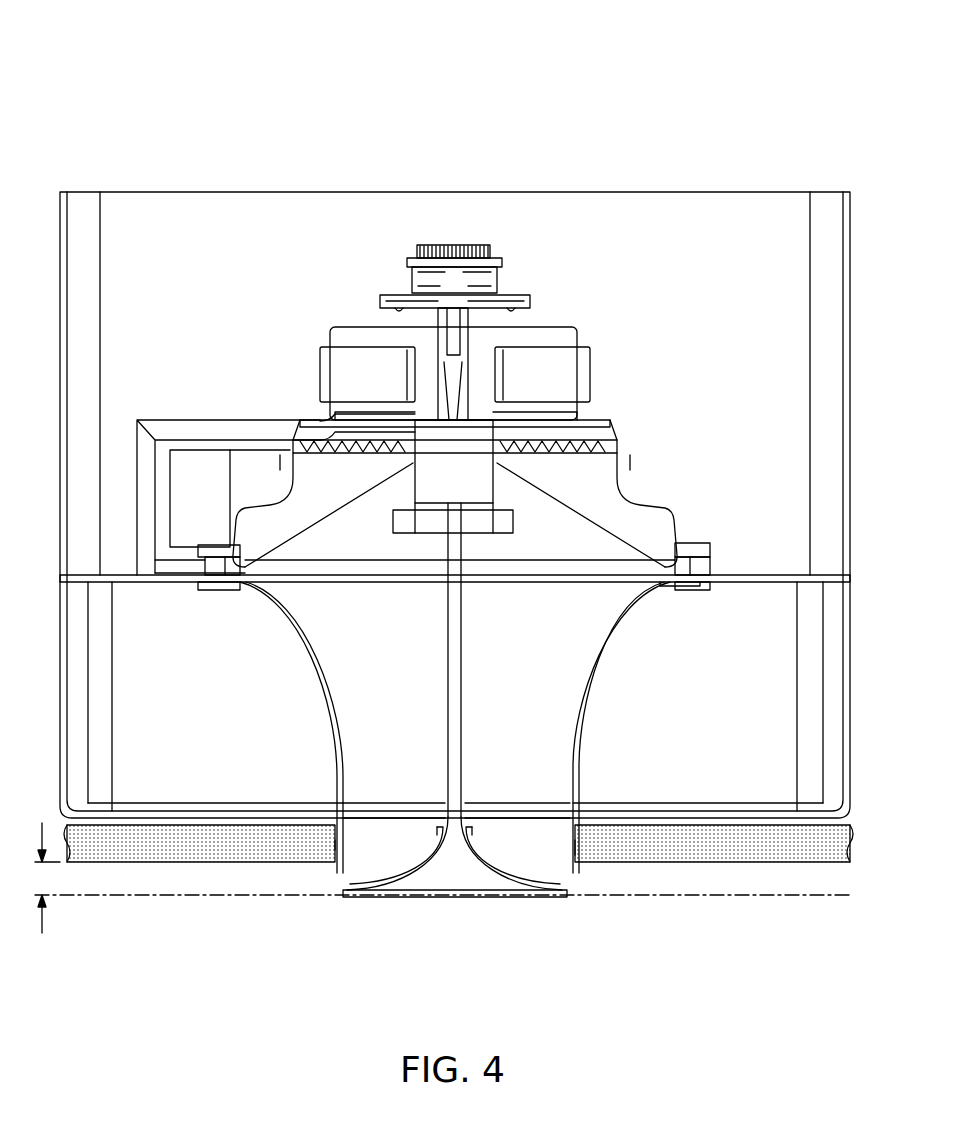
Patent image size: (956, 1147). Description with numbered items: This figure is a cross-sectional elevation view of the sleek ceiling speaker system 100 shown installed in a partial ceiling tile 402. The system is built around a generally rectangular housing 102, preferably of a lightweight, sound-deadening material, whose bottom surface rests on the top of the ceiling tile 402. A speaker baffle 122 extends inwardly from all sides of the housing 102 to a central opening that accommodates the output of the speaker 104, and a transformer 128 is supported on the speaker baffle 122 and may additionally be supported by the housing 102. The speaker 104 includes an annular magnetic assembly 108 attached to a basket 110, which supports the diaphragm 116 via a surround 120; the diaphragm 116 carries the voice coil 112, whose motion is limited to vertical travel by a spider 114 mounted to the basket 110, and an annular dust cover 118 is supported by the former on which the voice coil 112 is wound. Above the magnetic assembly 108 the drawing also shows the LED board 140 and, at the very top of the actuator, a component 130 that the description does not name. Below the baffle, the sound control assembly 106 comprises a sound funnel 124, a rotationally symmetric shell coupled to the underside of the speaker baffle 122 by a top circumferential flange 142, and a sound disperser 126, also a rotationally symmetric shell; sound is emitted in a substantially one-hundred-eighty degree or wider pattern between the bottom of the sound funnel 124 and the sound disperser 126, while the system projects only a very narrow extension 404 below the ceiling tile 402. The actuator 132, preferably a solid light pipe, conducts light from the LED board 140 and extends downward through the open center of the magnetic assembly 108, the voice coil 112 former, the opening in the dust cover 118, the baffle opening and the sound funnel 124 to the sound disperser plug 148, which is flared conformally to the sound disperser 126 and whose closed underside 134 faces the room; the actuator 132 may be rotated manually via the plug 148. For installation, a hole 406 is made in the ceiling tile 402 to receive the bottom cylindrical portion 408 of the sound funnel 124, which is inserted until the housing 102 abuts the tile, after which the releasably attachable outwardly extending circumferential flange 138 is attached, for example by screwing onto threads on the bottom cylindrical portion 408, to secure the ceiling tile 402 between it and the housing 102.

The sleek ceiling speaker system 100 is at (183, 50).
The housing 102 is at (62, 192).
The speaker 104 is at (286, 299).
The sound control assembly 106 is at (628, 732).
The annular magnetic assembly 108 is at (617, 327).
The basket 110 is at (630, 500).
The voice coil 112 is at (597, 424).
The spider 114 is at (600, 452).
The diaphragm 116 is at (600, 527).
The annular dust cover 118 is at (505, 533).
The surround 120 is at (700, 572).
The speaker baffle 122 is at (138, 582).
The sound funnel 124 is at (308, 678).
The sound disperser 126 is at (558, 888).
The transformer 128 is at (250, 438).
The knob 130 is at (445, 247).
The actuator 132 is at (453, 670).
The underside of sound disperser plug 134 is at (464, 903).
The releasably attachable outwardly extending circumferential flange 138 is at (332, 872).
The LED board 140 is at (505, 300).
The top circumferential flange 142 is at (688, 590).
The sound disperser plug 148 is at (443, 873).
The ceiling tile 402 is at (182, 857).
The extension 404 is at (441, 878).
The hole 406 is at (577, 850).
The bottom cylindrical portion 408 is at (335, 845).